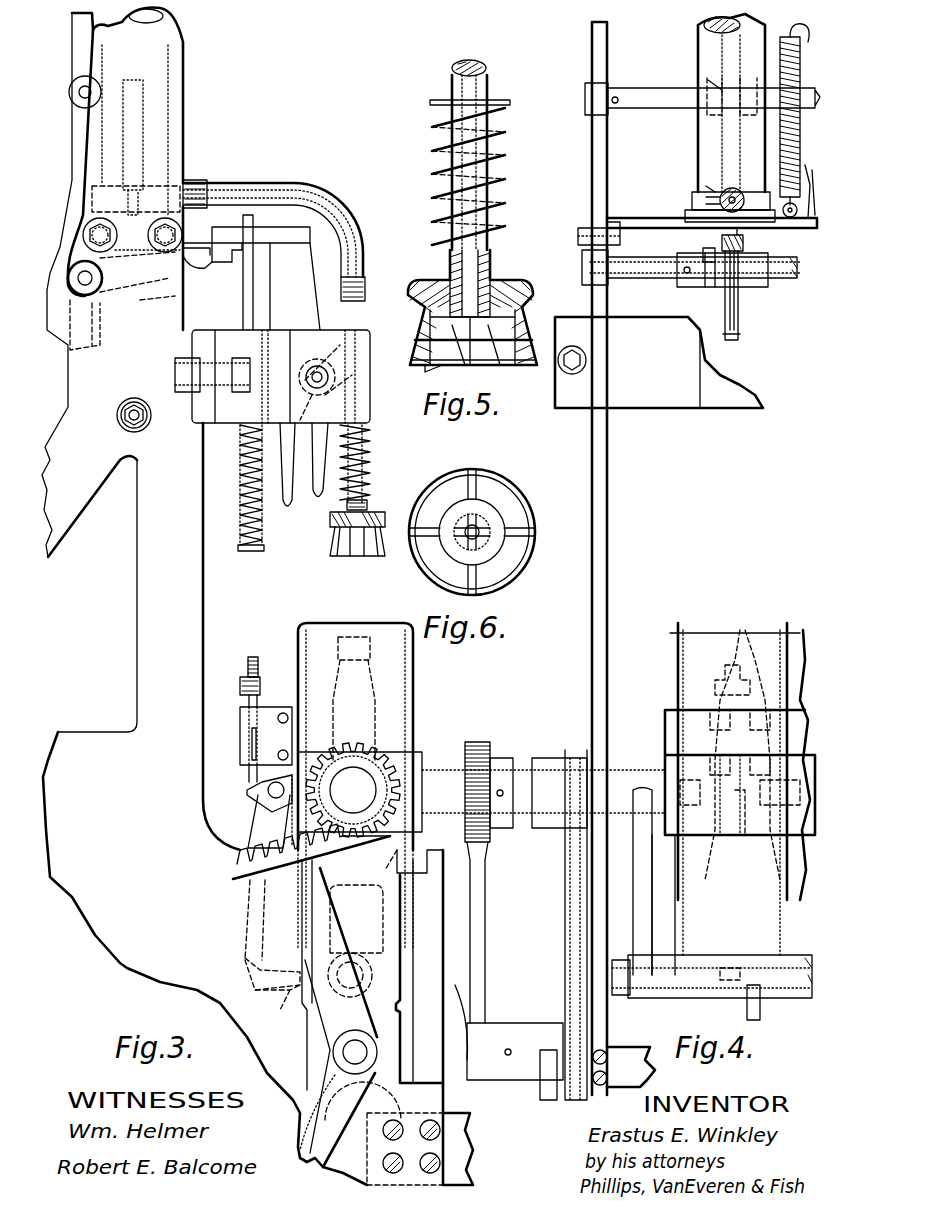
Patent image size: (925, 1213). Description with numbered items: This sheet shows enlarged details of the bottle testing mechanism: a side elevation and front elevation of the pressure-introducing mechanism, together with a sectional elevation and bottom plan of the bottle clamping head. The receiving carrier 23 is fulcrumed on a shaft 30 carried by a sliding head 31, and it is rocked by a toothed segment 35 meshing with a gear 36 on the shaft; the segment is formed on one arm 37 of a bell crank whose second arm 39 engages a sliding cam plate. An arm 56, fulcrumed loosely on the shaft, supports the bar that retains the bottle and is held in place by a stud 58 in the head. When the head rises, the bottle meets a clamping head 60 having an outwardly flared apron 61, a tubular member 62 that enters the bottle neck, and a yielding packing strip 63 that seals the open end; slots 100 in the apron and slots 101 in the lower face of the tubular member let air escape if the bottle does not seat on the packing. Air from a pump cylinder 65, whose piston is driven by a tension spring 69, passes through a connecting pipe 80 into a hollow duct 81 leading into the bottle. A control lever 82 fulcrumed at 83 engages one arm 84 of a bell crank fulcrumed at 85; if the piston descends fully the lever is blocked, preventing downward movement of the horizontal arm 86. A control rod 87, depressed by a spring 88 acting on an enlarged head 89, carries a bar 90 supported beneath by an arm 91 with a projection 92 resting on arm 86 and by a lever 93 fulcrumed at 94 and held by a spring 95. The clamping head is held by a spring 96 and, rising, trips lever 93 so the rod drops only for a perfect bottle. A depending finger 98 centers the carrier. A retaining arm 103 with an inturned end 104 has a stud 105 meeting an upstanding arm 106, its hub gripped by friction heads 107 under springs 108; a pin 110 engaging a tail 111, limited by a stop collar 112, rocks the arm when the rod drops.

In FIG. 3, the receiving carrier 23 is at (404, 708).
In FIG. 3, the shaft 30 is at (358, 787).
In FIG. 3, the sliding head 31 is at (556, 758).
In FIG. 3, the toothed segment 35 is at (240, 882).
In FIG. 3, the gear 36 is at (398, 773).
In FIG. 3, the arm of bell crank 37 is at (333, 931).
In FIG. 3, the second arm of bell crank 39 is at (315, 1077).
In FIG. 3, the arm 56 is at (420, 848).
In FIG. 4, the arm 56 is at (642, 887).
In FIG. 3, the stud 58 is at (318, 832).
In FIG. 4, the stud 58 is at (635, 838).
In FIG. 3, the clamping head 60 is at (368, 504).
In FIG. 3, the apron 61 is at (372, 556).
In FIG. 5, the apron 61 is at (530, 333).
In FIG. 3, the tubular member 62 is at (386, 512).
In FIG. 5, the tubular member 62 is at (500, 282).
In FIG. 3, the packing strip 63 is at (352, 558).
In FIG. 5, the packing strip 63 is at (455, 320).
In FIG. 3, the pump cylinder 65 is at (172, 114).
In FIG. 4, the pump cylinder 65 is at (698, 142).
In FIG. 3, the tension spring 69 is at (145, 145).
In FIG. 4, the tension spring 69 is at (808, 40).
In FIG. 3, the connecting pipe 80 is at (312, 190).
In FIG. 4, the connecting pipe 80 is at (720, 195).
In FIG. 5, the connecting pipe 80 is at (490, 128).
In FIG. 3, the hollow duct 81 is at (372, 390).
In FIG. 5, the hollow duct 81 is at (425, 370).
In FIG. 3, the control lever 82 is at (74, 66).
In FIG. 4, the control lever 82 is at (741, 333).
In FIG. 3, the fulcrum of control lever 83 is at (82, 100).
In FIG. 4, the fulcrum of control lever 83 is at (705, 86).
In FIG. 3, the arm of bell crank 84 is at (96, 320).
In FIG. 4, the arm of bell crank 84 is at (739, 302).
In FIG. 3, the fulcrum of bell crank 85 is at (63, 305).
In FIG. 4, the fulcrum of bell crank 85 is at (770, 263).
In FIG. 3, the horizontal arm of bell crank 86 is at (170, 285).
In FIG. 4, the horizontal arm of bell crank 86 is at (708, 275).
In FIG. 3, the control rod 87 is at (254, 310).
In FIG. 3, the spring 88 is at (242, 468).
In FIG. 5, the spring 88 is at (505, 174).
In FIG. 3, the enlarged head 89 is at (264, 546).
In FIG. 3, the bar 90 is at (268, 228).
In FIG. 4, the bar 90 is at (722, 240).
In FIG. 3, the arm 91 is at (205, 270).
In FIG. 4, the arm 91 is at (738, 250).
In FIG. 3, the projection 92 is at (185, 244).
In FIG. 4, the projection 92 is at (703, 250).
In FIG. 3, the lever 93 is at (304, 288).
In FIG. 3, the fulcrum of lever 94 is at (306, 374).
In FIG. 3, the spring 95 is at (308, 390).
In FIG. 3, the spring 96 is at (372, 468).
In FIG. 3, the depending finger 98 is at (293, 493).
In FIG. 5, the slots 100 is at (440, 366).
In FIG. 6, the slots 100 is at (472, 486).
In FIG. 5, the slots 101 is at (530, 308).
In FIG. 6, the slots 101 is at (485, 527).
In FIG. 3, the retaining arm 103 is at (265, 840).
In FIG. 3, the inturned lower end 104 is at (280, 992).
In FIG. 3, the stud 105 is at (243, 963).
In FIG. 3, the upstanding arm 106 is at (470, 1002).
In FIG. 4, the friction heads 107 is at (738, 634).
In FIG. 4, the springs 108 is at (695, 837).
In FIG. 3, the pin 110 is at (240, 708).
In FIG. 3, the tail 111 is at (245, 787).
In FIG. 3, the stop collar 112 is at (240, 685).